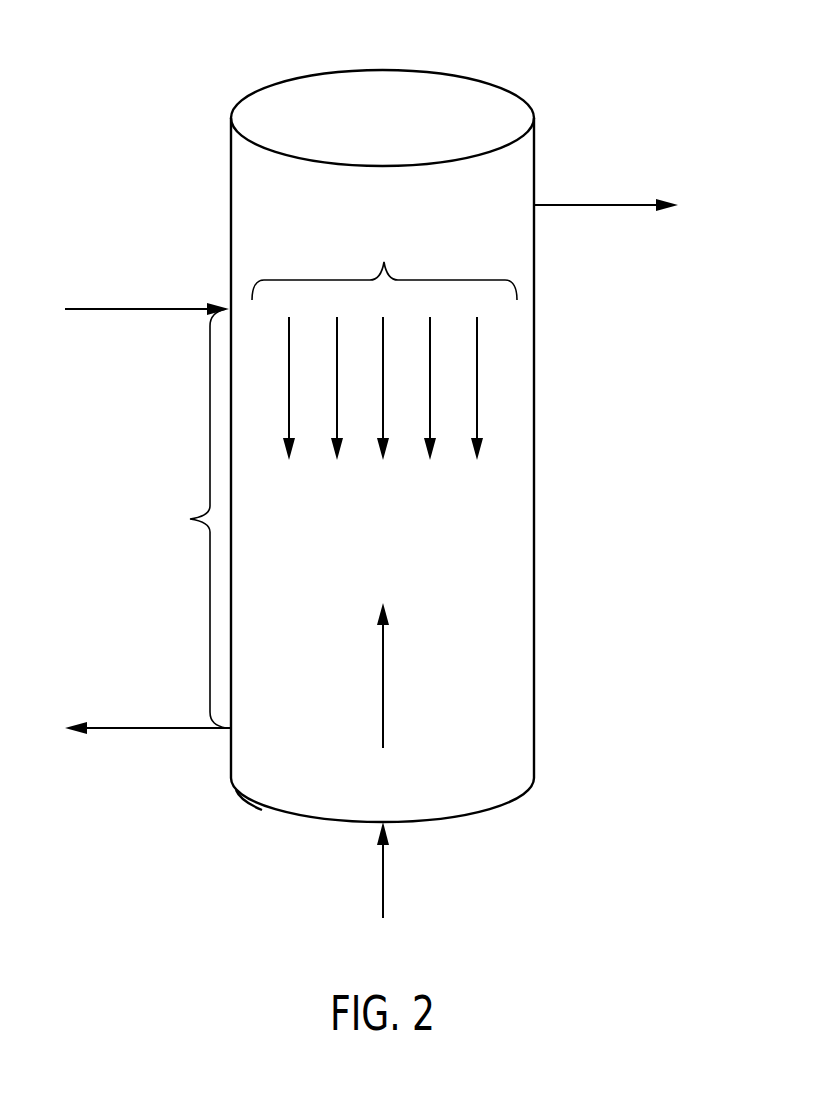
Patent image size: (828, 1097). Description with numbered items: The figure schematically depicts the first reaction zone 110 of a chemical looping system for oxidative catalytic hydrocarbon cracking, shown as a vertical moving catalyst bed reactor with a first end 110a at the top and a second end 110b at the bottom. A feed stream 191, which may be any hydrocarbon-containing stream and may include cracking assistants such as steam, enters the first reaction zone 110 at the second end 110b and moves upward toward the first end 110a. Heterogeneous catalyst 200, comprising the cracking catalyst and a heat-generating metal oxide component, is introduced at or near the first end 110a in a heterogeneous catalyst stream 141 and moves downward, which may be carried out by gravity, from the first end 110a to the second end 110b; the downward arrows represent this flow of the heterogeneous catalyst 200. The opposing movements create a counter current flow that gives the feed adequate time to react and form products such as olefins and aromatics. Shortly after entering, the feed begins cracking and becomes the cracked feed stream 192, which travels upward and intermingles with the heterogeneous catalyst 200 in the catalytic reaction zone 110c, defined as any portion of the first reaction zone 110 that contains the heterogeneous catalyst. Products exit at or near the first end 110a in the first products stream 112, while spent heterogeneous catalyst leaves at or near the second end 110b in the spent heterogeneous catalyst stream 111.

The first reaction zone 110 is at (534, 502).
The first end 110a is at (384, 90).
The second end 110b is at (250, 800).
The catalytic reaction zone 110c is at (187, 518).
The spent heterogeneous catalyst stream 111 is at (137, 728).
The first products stream 112 is at (588, 203).
The heterogeneous catalyst stream 141 is at (137, 311).
The feed stream 191 is at (384, 873).
The cracked feed stream 192 is at (384, 683).
The heterogeneous catalyst 200 is at (384, 345).